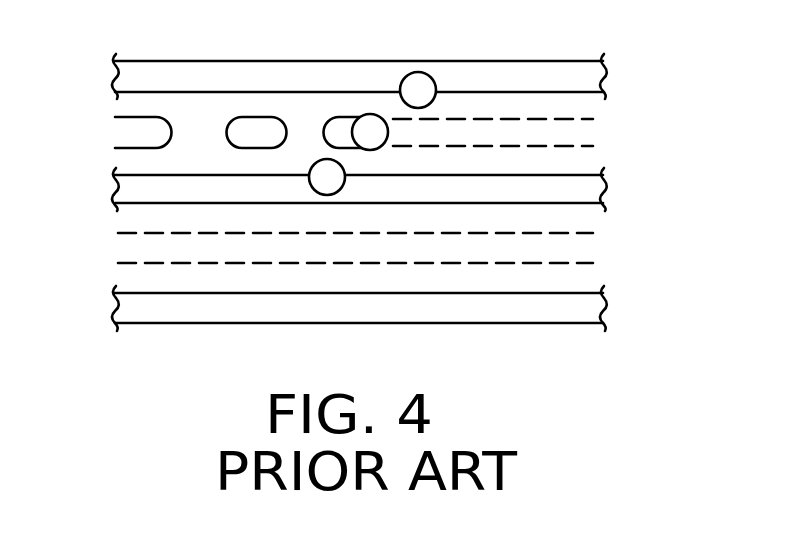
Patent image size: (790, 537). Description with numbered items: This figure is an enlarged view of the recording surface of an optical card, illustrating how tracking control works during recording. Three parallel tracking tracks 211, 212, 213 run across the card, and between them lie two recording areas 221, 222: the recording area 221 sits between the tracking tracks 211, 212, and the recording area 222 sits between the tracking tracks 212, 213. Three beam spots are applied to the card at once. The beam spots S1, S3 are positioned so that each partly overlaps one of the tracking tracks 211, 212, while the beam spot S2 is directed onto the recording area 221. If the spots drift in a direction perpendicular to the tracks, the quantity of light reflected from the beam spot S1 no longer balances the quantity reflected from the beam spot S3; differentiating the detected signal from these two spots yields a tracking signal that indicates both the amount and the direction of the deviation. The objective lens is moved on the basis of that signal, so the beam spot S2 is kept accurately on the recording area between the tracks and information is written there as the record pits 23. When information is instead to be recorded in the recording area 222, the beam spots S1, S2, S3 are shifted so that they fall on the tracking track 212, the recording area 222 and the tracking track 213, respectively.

The tracking track 211 is at (587, 77).
The tracking track 212 is at (587, 191).
The tracking track 213 is at (590, 308).
The recording area 221 is at (615, 95).
The recording area 222 is at (615, 209).
The record pits 23 is at (132, 128).
The beam spot S1 is at (418, 72).
The beam spot S2 is at (370, 114).
The beam spot S3 is at (327, 159).